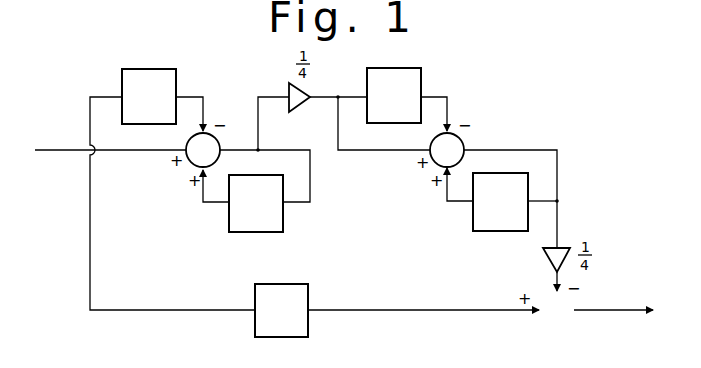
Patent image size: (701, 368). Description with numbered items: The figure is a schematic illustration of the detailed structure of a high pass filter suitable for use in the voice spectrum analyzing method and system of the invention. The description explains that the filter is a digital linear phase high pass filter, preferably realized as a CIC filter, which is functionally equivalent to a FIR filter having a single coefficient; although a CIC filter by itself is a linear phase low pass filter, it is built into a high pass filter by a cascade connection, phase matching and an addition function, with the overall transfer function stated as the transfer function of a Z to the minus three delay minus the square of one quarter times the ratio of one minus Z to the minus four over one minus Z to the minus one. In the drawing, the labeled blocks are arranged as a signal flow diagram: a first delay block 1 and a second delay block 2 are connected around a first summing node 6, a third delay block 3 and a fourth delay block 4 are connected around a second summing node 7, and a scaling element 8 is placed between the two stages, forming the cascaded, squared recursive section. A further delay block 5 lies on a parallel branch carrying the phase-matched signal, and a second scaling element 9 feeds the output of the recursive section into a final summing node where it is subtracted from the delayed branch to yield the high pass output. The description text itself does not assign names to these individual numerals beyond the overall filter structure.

The delay element Z^-4 1 is at (163, 68).
The delay element Z^-1 2 is at (283, 219).
The delay element Z^-4 3 is at (417, 66).
The delay element Z^-1 4 is at (472, 219).
The delay element Z^-3 5 is at (308, 299).
The adder 6 is at (221, 142).
The adder 7 is at (464, 138).
The multiplier 1/4 8 is at (302, 107).
The multiplier 1/4 9 is at (543, 260).